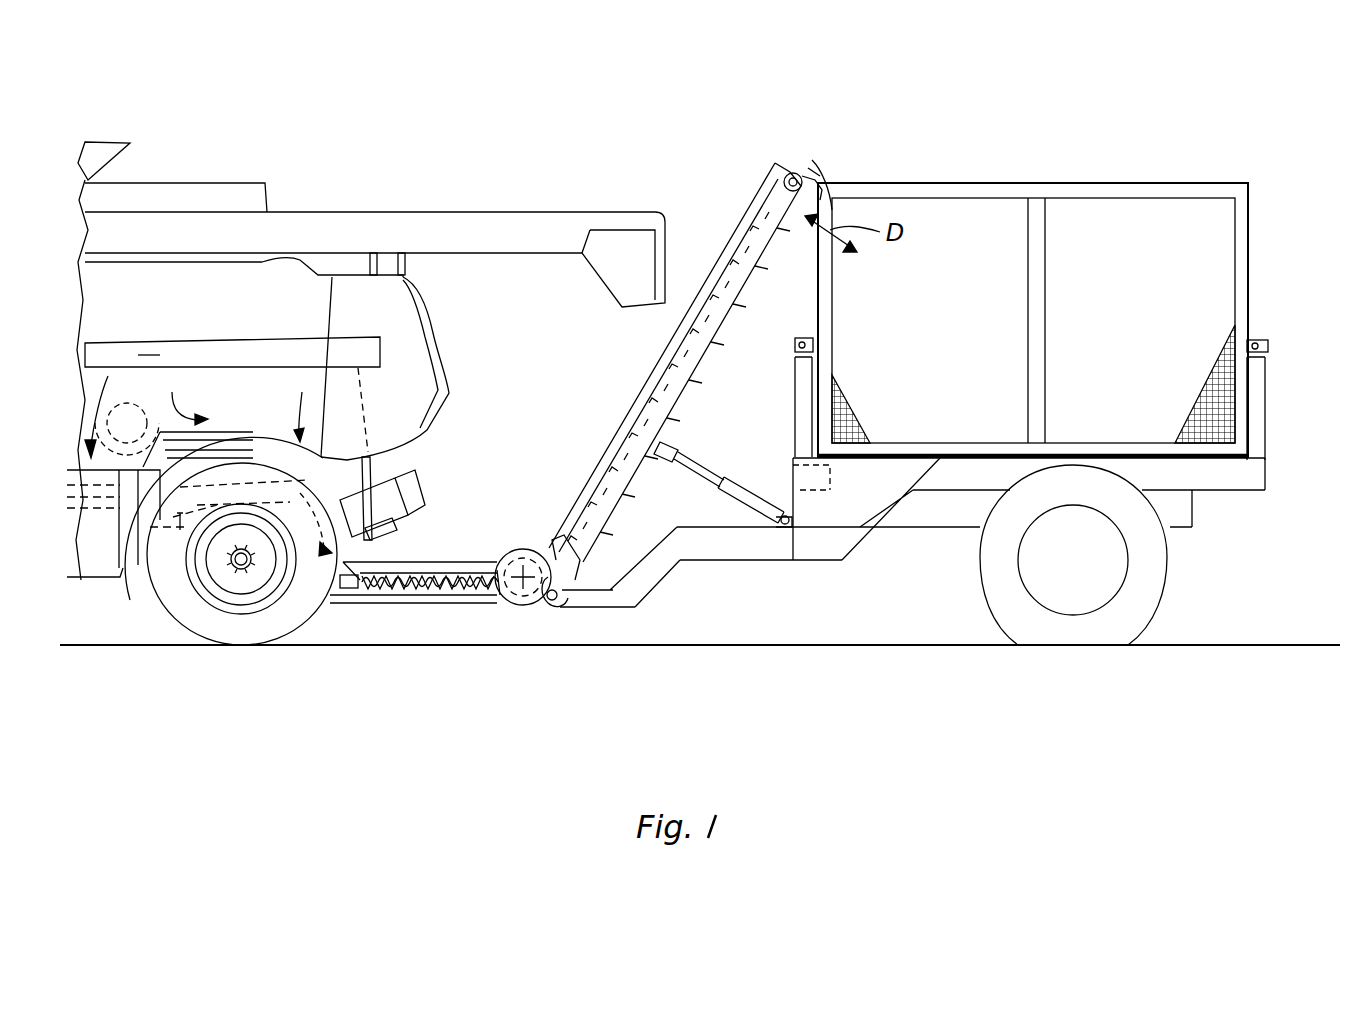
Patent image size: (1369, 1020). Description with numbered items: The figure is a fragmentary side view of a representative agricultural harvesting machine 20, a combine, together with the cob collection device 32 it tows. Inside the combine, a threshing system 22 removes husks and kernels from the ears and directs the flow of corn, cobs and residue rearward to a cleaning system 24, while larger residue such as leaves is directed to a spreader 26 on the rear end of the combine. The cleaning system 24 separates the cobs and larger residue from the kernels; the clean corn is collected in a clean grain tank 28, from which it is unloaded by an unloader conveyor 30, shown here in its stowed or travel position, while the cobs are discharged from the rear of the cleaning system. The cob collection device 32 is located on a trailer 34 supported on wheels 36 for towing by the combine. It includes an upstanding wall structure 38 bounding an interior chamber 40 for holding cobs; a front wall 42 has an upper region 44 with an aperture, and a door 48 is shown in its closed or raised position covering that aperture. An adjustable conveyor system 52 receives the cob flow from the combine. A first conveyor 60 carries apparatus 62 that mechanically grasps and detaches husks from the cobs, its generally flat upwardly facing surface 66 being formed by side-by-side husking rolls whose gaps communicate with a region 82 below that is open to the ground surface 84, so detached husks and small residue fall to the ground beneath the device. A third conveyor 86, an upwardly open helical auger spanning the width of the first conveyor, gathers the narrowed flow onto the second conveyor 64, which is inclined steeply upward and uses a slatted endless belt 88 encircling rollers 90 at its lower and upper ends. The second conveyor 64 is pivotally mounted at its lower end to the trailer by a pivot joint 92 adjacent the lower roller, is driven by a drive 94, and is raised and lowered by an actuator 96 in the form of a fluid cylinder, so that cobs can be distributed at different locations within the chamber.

The agricultural harvesting machine 20 is at (542, 92).
The threshing system 22 is at (92, 355).
The cleaning system 24 is at (130, 600).
The spreader 26 is at (390, 480).
The clean grain tank 28 is at (110, 142).
The unloader conveyor 30 is at (605, 210).
The cob collection device 32 is at (957, 340).
The trailer 34 is at (760, 565).
The wheels 36 is at (1160, 602).
The upstanding wall structure 38 is at (1250, 216).
The interior chamber 40 is at (1146, 222).
The front wall 42 is at (822, 185).
The upper region 44 is at (851, 143).
The door 48 is at (812, 257).
The adjustable conveyor system 52 is at (738, 205).
The first conveyor 60 is at (380, 610).
The apparatus 62 is at (436, 576).
The second conveyor 64 is at (648, 380).
The upwardly facing surface 66 is at (398, 573).
The region 82 is at (449, 626).
The ground surface 84 is at (508, 633).
The third conveyor 86 is at (523, 548).
The slatted endless belt 88 is at (712, 352).
The rollers 90 is at (558, 604).
The pivot joint 92 is at (578, 563).
The drive 94 is at (792, 172).
The actuator 96 is at (748, 498).